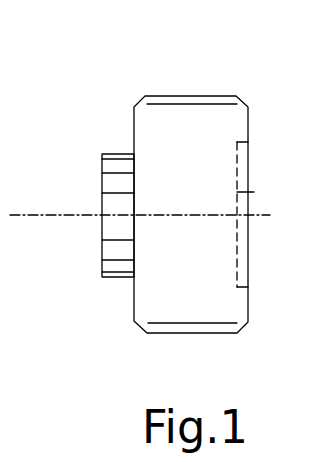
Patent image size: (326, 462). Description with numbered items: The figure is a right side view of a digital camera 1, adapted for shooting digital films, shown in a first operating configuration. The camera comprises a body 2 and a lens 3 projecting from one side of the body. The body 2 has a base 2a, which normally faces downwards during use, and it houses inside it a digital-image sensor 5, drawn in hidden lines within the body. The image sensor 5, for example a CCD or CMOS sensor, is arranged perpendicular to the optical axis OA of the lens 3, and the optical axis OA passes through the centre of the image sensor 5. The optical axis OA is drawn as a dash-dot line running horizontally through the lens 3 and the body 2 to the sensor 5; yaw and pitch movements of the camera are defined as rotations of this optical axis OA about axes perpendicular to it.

The digital camera 1 is at (77, 86).
The body 2 is at (212, 90).
The base 2a is at (155, 333).
The lens 3 is at (102, 254).
The digital-image sensor 5 is at (255, 190).
The optical axis OA is at (33, 210).